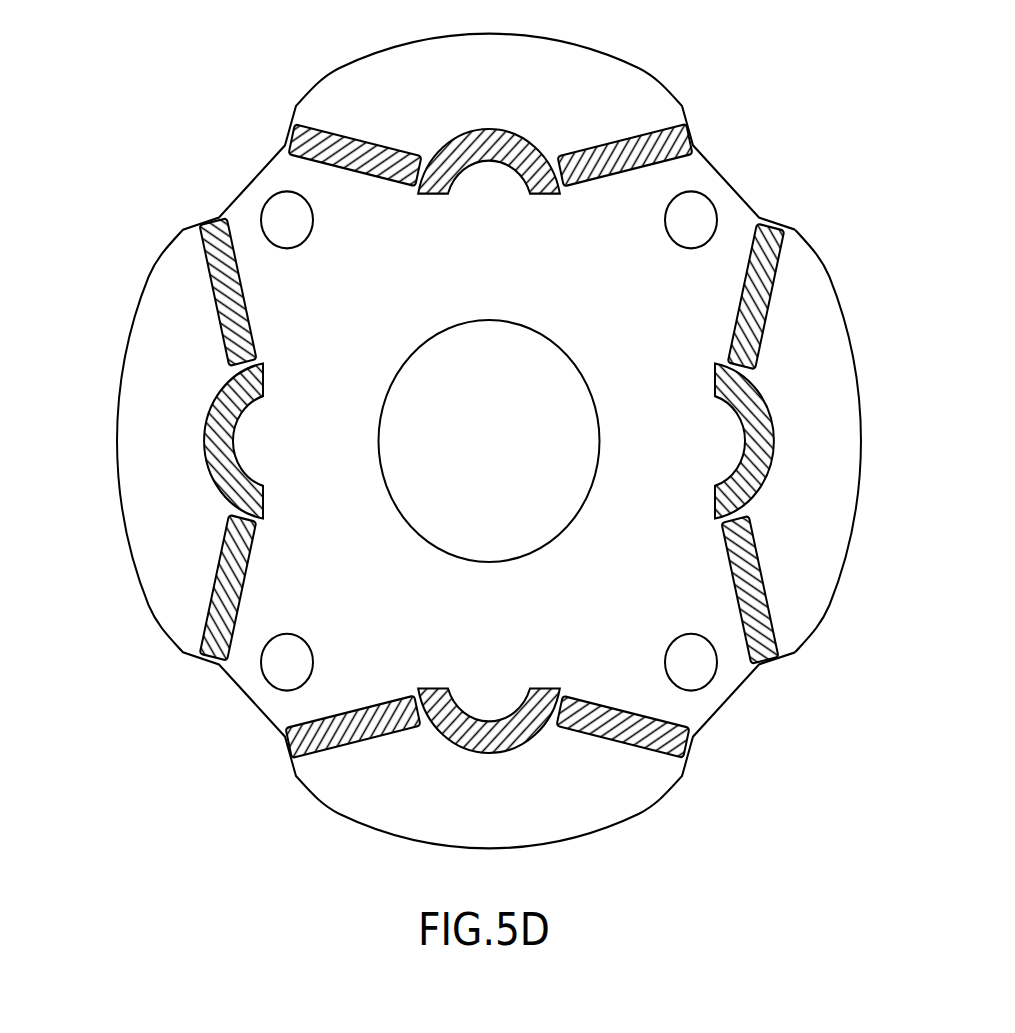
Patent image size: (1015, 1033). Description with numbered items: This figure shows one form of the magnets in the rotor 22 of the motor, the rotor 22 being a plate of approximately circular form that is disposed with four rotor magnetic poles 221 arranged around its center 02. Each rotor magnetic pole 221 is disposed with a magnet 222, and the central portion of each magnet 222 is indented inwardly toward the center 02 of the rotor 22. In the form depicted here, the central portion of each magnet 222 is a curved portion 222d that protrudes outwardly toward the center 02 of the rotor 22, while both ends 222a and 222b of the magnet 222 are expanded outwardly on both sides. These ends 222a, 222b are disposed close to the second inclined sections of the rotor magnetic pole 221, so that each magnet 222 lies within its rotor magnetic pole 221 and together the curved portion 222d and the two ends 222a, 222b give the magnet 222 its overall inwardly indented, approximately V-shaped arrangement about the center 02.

The rotor 22 is at (707, 698).
The rotor magnetic pole 221 is at (780, 482).
The magnet 222 is at (737, 276).
The end of magnet 222a is at (293, 135).
The end of magnet 222b is at (686, 140).
The curved portion 222d is at (528, 142).
The center of the rotor 02 is at (489, 441).